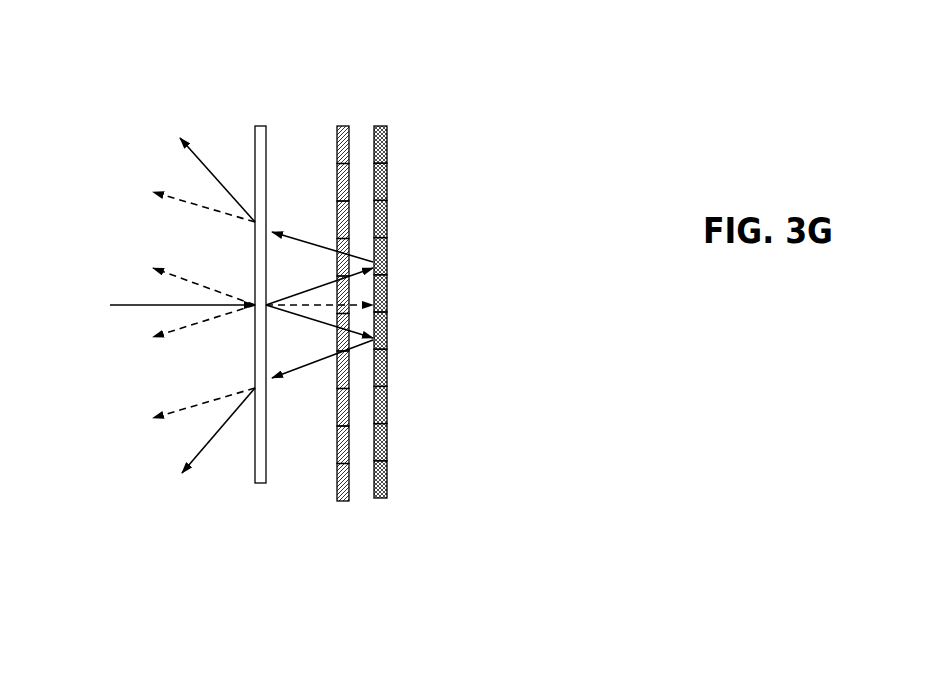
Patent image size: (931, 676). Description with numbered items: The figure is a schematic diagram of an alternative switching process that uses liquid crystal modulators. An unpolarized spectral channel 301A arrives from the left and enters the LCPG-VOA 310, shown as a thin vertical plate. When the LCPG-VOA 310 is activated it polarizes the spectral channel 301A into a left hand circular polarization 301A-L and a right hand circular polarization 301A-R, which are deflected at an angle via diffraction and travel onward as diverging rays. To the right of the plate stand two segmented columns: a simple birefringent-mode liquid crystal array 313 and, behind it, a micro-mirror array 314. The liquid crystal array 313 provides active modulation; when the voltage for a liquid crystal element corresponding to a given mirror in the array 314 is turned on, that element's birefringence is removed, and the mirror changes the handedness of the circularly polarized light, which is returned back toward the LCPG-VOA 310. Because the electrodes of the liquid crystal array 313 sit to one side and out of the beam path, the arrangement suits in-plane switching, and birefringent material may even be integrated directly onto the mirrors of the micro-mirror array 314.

The LCPG-VOA 310 is at (260, 123).
The liquid crystal array 313 is at (338, 501).
The micro-mirror array 314 is at (380, 122).
The unpolarized spectral channel 301A is at (147, 313).
The left hand circular polarization 301A-L is at (305, 290).
The right hand circular polarization 301A-R is at (312, 327).